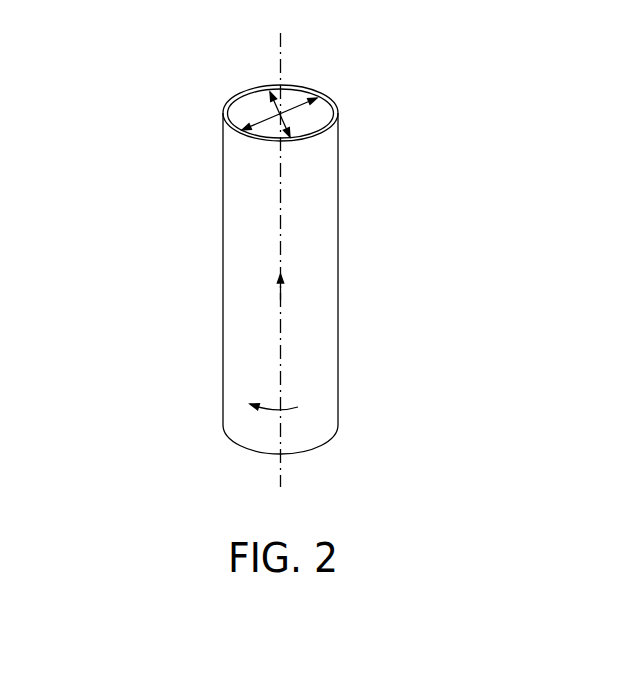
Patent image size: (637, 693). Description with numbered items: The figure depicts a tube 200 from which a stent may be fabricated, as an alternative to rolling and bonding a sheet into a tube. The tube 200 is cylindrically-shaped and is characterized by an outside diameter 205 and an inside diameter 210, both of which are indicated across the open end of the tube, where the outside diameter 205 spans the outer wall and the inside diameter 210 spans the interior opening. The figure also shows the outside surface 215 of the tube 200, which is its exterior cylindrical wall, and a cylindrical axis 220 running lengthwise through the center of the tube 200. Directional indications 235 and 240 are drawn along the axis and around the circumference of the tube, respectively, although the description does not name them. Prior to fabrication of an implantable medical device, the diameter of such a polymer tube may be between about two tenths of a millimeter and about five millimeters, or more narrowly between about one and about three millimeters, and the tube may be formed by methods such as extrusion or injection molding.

The tube 200 is at (243, 486).
The outside diameter 205 is at (307, 92).
The inside diameter 210 is at (273, 106).
The outside surface 215 is at (312, 353).
The cylindrical axis 220 is at (281, 181).
The axial direction of movement 235 is at (282, 318).
The direction of rotation 240 is at (298, 407).